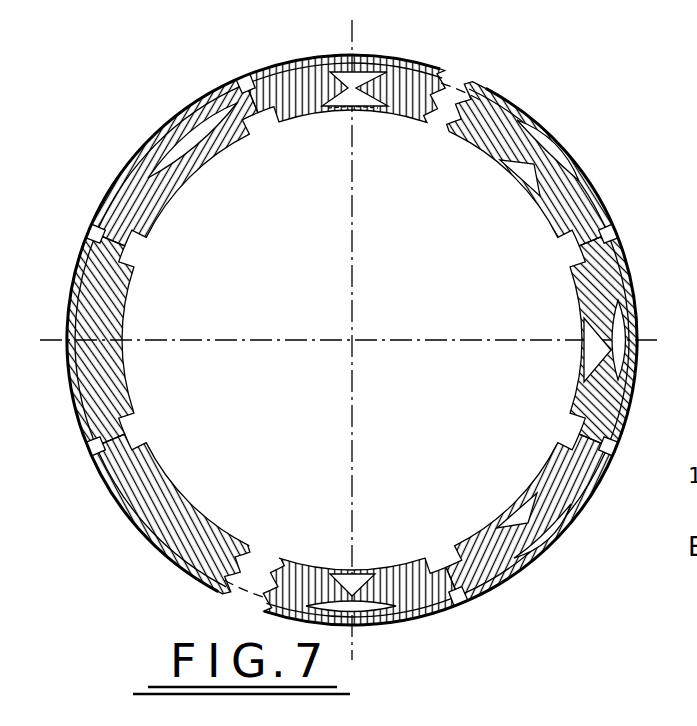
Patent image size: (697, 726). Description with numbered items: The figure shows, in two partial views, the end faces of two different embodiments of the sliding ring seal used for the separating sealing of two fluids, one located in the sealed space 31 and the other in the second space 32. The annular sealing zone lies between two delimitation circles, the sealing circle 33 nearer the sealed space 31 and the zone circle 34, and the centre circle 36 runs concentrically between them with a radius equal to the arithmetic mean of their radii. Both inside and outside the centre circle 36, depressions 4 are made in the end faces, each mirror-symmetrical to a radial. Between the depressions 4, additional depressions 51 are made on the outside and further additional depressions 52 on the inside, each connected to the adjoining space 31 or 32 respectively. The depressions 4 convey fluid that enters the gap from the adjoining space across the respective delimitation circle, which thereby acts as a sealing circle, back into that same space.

The depressions 4 is at (157, 153).
The sealed space 31 is at (424, 46).
The second space 32 is at (292, 213).
The sealing circle 33 is at (268, 70).
The zone circle 34 is at (290, 122).
The centre circle 36 is at (444, 100).
The additional depressions 51 is at (605, 238).
The further additional depressions 52 is at (574, 247).